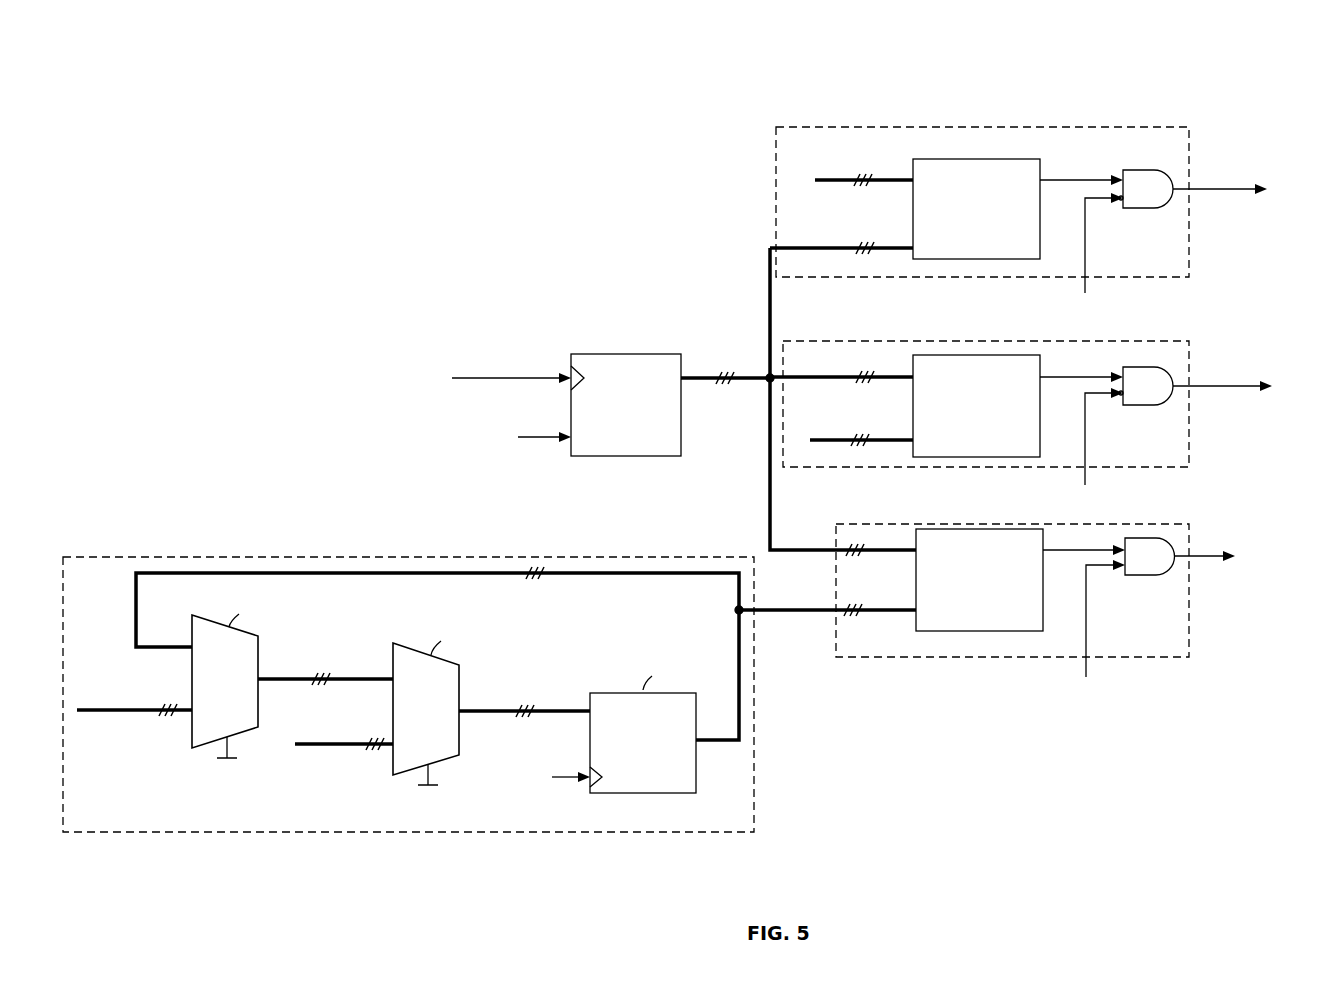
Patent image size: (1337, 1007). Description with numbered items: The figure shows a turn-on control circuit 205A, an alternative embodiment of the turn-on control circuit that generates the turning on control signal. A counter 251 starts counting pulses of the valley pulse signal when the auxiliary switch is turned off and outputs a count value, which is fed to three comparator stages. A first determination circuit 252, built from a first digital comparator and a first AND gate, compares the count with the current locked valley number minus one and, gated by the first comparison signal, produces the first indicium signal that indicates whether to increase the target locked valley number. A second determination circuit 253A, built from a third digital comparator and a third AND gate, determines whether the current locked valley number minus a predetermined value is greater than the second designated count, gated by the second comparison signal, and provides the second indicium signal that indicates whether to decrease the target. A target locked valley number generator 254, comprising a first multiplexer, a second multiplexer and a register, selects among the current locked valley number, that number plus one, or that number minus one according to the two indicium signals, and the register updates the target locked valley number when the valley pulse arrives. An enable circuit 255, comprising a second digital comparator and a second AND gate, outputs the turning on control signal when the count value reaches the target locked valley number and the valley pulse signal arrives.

The turn-on control circuit 205A is at (796, 79).
The counter 251 is at (626, 457).
The first determination circuit 252 is at (862, 468).
The second determination circuit 253A is at (860, 278).
The target locked valley number generator 254 is at (150, 834).
The enable circuit 255 is at (867, 658).